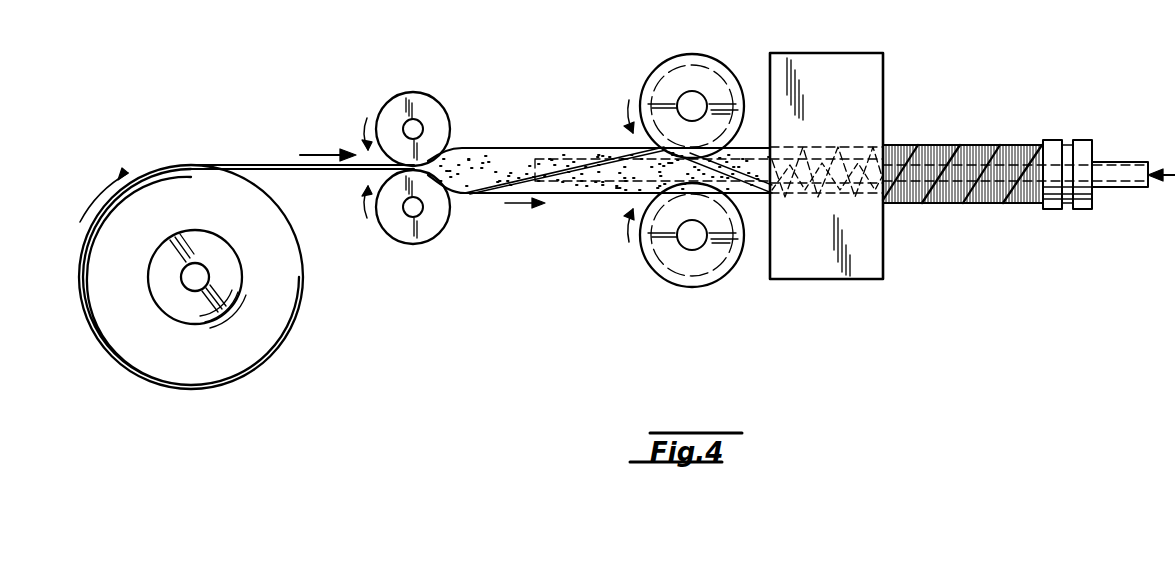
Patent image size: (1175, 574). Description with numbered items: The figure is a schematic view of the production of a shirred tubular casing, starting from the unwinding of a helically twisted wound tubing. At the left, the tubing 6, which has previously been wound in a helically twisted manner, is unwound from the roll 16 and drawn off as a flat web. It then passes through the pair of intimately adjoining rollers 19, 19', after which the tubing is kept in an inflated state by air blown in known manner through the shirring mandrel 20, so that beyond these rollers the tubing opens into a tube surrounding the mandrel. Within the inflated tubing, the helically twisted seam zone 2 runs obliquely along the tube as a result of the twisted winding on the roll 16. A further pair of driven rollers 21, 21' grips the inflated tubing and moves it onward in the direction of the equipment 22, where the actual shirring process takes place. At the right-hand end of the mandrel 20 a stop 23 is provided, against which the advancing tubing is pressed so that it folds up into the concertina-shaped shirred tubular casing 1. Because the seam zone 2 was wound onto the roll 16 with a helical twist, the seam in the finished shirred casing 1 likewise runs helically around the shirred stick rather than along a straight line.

The shirred tubular casing 1 is at (940, 205).
The helically twisted seam zone 2 is at (613, 157).
The tubing 6 is at (248, 166).
The roll 16 is at (304, 300).
The intimately adjoining roller 19 is at (388, 117).
The intimately adjoining roller 19' is at (426, 218).
The shirring mandrel 20 is at (598, 173).
The driven roller 21 is at (687, 89).
The driven roller 21' is at (698, 249).
The shirring equipment 22 is at (815, 272).
The stop 23 is at (1048, 140).